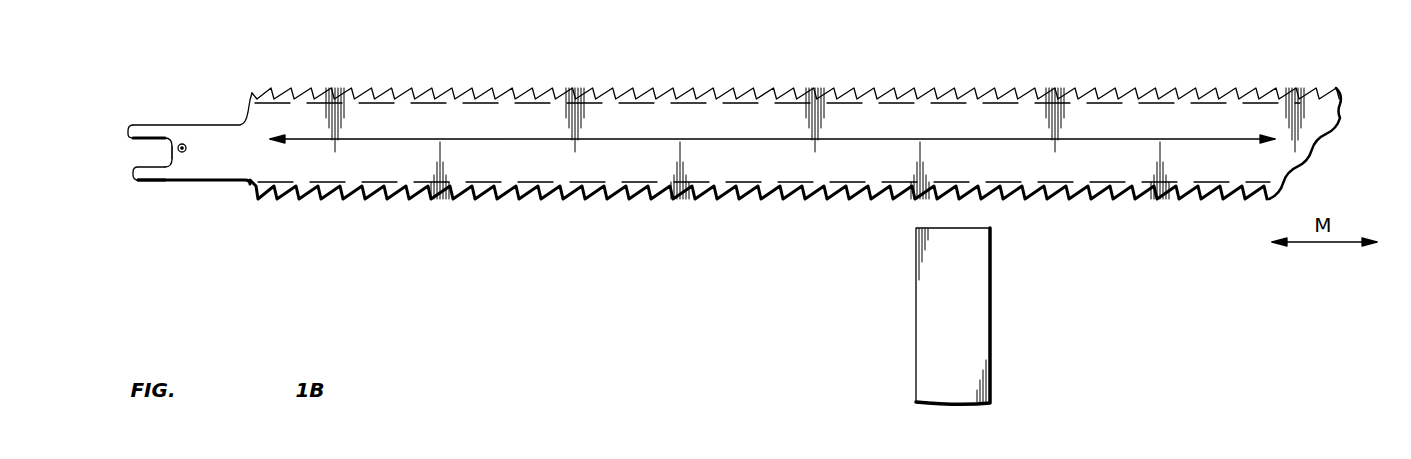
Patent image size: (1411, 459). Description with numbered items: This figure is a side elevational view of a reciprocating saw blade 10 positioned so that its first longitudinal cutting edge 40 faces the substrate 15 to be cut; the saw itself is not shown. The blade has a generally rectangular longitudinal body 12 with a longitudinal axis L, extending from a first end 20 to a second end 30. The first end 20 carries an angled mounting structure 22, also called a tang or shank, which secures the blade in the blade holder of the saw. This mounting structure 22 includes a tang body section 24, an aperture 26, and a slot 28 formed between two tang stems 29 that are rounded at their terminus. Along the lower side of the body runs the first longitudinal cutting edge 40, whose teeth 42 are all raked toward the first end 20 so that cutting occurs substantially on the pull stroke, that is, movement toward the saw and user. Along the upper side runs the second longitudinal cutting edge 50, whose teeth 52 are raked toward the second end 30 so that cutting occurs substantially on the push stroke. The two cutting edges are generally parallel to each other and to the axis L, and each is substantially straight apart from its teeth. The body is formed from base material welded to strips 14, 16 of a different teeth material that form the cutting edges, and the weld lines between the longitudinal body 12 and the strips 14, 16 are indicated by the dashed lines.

The reciprocating saw blade 10 is at (1108, 42).
The longitudinal body 12 is at (998, 164).
The strip of teeth material 14 is at (1212, 188).
The substrate 15 is at (962, 298).
The strip of teeth material 16 is at (1250, 98).
The first end 20 is at (217, 145).
The angled mounting structure 22 is at (166, 129).
The tang body section 24 is at (172, 140).
The aperture 26 is at (186, 153).
The slot 28 is at (165, 148).
The tang stems 29 is at (130, 126).
The second end 30 is at (1302, 127).
The first longitudinal cutting edge 40 is at (705, 200).
The teeth 42 is at (850, 200).
The second longitudinal cutting edge 50 is at (825, 97).
The teeth 52 is at (1010, 97).